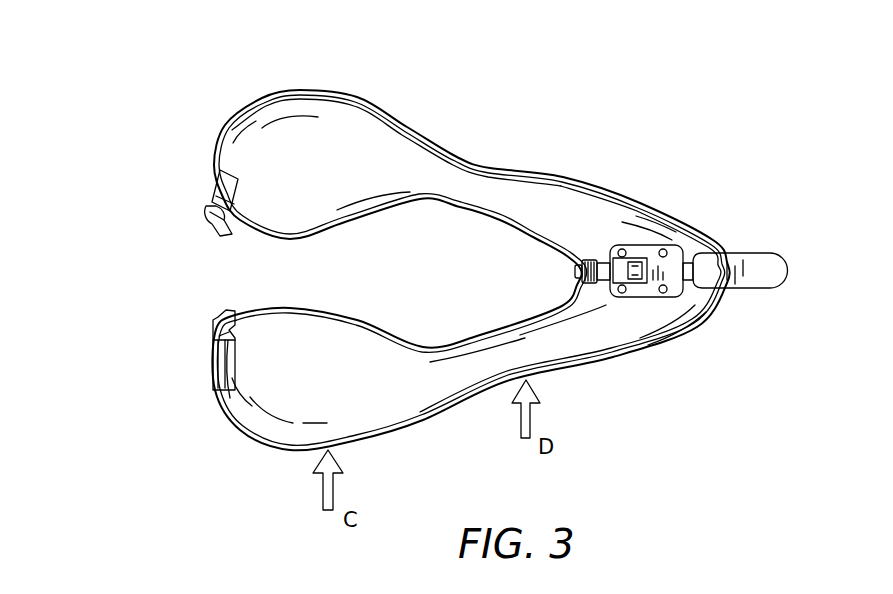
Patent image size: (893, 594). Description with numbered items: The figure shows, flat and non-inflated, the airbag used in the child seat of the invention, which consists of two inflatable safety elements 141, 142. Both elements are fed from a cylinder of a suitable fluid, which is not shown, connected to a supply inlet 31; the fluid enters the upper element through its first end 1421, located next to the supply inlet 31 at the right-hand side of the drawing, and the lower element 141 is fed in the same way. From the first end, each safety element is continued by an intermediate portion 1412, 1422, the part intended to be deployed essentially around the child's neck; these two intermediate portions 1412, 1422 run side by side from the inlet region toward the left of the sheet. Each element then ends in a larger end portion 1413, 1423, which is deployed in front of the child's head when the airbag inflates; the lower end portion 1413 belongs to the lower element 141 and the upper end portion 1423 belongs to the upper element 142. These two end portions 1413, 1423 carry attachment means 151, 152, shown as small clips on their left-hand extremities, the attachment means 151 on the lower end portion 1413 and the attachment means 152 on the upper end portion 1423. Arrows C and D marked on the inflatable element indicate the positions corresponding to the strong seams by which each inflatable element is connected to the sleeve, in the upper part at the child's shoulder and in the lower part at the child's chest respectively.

The inflatable safety element 142 is at (474, 160).
The first end 1421 is at (597, 231).
The intermediate portion 1422 is at (641, 220).
The end portion 1423 is at (305, 131).
The inflatable safety element 141 is at (492, 386).
The intermediate portion 1412 is at (601, 334).
The end portion 1413 is at (290, 428).
The attachment means 151 is at (212, 367).
The attachment means 152 is at (217, 192).
The supply inlet 31 is at (760, 274).